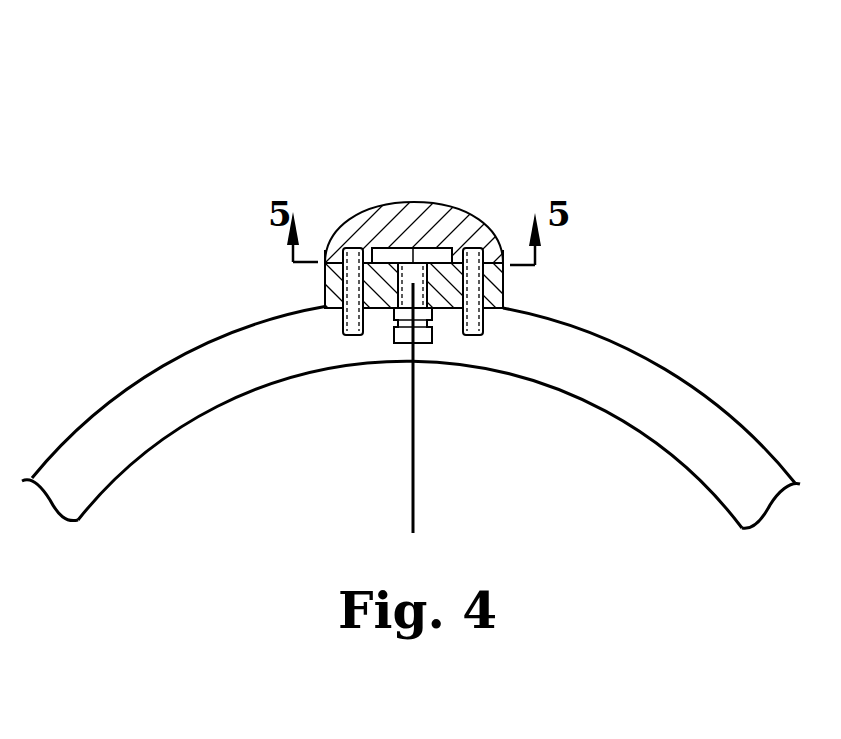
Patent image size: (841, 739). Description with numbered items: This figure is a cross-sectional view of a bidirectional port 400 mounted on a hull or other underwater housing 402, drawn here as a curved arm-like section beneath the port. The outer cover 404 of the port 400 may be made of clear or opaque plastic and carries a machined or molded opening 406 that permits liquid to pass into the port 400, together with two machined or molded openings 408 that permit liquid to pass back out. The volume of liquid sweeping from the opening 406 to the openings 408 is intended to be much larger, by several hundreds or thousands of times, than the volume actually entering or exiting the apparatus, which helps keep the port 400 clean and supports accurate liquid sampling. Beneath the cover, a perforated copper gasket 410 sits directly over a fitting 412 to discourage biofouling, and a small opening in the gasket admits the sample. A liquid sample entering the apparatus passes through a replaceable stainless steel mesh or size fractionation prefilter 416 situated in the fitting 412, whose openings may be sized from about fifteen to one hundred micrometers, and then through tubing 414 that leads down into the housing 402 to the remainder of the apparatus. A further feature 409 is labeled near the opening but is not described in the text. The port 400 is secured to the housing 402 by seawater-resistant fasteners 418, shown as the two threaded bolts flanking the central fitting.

The bidirectional port 400 is at (495, 105).
The housing 402 is at (148, 376).
The outer cover 404 is at (443, 203).
The opening 406 is at (432, 248).
The openings 408 is at (325, 258).
The slot wall 409 is at (402, 250).
The perforated copper gasket 410 is at (490, 287).
The fitting 412 is at (433, 272).
The tubing 414 is at (413, 423).
The prefilter 416 is at (403, 283).
The fasteners 418 is at (343, 327).